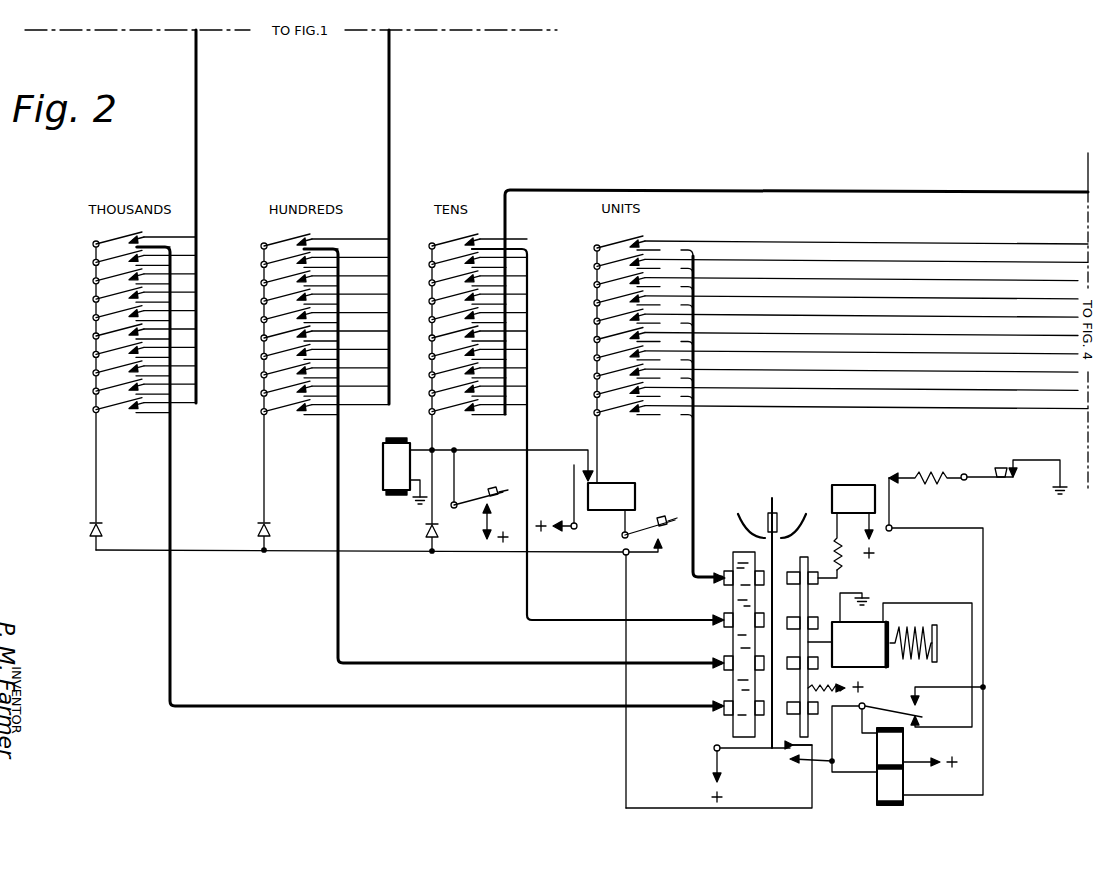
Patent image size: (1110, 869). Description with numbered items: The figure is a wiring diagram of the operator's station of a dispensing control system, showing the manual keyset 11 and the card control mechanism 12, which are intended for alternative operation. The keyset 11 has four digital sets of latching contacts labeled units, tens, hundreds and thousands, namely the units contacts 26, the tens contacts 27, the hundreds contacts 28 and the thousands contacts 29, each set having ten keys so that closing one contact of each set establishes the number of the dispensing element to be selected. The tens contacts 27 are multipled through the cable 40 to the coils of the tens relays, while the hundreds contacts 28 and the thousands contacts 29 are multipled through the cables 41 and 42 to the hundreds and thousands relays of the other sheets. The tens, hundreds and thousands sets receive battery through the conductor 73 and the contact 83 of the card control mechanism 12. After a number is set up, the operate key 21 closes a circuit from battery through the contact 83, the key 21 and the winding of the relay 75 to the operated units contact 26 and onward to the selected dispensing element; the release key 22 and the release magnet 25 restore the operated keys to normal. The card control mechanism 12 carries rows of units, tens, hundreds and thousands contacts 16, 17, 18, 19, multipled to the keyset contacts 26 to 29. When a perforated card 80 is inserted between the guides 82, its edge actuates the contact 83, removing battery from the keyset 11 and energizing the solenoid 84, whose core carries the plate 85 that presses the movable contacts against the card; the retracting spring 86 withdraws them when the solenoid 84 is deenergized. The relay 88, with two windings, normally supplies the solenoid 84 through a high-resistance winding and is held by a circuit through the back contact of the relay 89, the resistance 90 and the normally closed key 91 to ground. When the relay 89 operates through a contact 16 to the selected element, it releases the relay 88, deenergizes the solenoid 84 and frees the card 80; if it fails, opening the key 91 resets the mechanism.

The keyset 11 is at (88, 270).
The card control mechanism 12 is at (712, 715).
The units contacts 16 is at (765, 574).
The tens contacts 17 is at (765, 630).
The hundreds contacts 18 is at (766, 676).
The thousands contacts 19 is at (766, 710).
The operate key 21 is at (677, 510).
The release key 22 is at (502, 490).
The release magnet 25 is at (380, 477).
The units contacts 26 is at (612, 249).
The tens contacts 27 is at (454, 247).
The hundreds contacts 28 is at (284, 248).
The thousands contacts 29 is at (110, 243).
The cable 40 is at (862, 191).
The cable 41 is at (390, 140).
The cable 42 is at (197, 140).
The conductor 73 is at (592, 553).
The relay 75 is at (617, 487).
The card 80 is at (776, 511).
The guides 82 is at (762, 523).
The contact 83 is at (790, 751).
The solenoid 84 is at (858, 632).
The plate 85 is at (806, 610).
The retracting spring 86 is at (905, 627).
The relay 88 is at (902, 755).
The relay 89 is at (852, 490).
The resistance 90 is at (924, 474).
The key 91 is at (1000, 466).